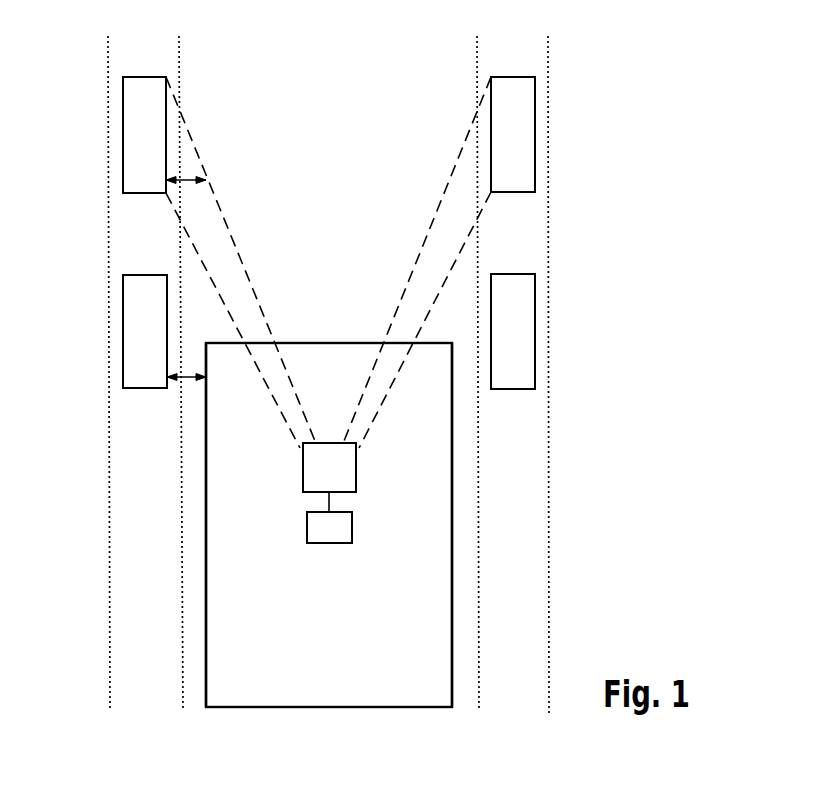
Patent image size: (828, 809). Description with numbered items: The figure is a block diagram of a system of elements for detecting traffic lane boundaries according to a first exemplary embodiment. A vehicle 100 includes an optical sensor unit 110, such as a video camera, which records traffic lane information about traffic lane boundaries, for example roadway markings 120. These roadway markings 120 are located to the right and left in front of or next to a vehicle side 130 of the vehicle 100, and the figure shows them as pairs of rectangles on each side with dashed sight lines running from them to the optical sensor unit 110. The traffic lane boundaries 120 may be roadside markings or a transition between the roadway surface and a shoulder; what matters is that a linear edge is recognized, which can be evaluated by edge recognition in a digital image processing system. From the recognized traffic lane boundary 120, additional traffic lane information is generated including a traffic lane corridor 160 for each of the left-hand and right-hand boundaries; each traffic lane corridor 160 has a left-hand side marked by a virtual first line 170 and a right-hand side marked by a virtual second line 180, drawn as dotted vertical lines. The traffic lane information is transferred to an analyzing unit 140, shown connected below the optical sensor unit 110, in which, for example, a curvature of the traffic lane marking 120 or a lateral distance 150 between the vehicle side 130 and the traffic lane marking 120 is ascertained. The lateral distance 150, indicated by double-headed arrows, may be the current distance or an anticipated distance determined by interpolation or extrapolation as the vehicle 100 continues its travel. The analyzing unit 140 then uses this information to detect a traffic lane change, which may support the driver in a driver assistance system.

The vehicle 100 is at (422, 657).
The optical sensor unit 110 is at (356, 467).
The roadway markings 120 is at (123, 126).
The vehicle side 130 is at (206, 585).
The analyzing unit 140 is at (352, 528).
The lateral distance 150 is at (185, 178).
The traffic lane corridor 160 is at (329, 238).
The virtual first line 170 is at (293, 356).
The virtual second line 180 is at (366, 358).